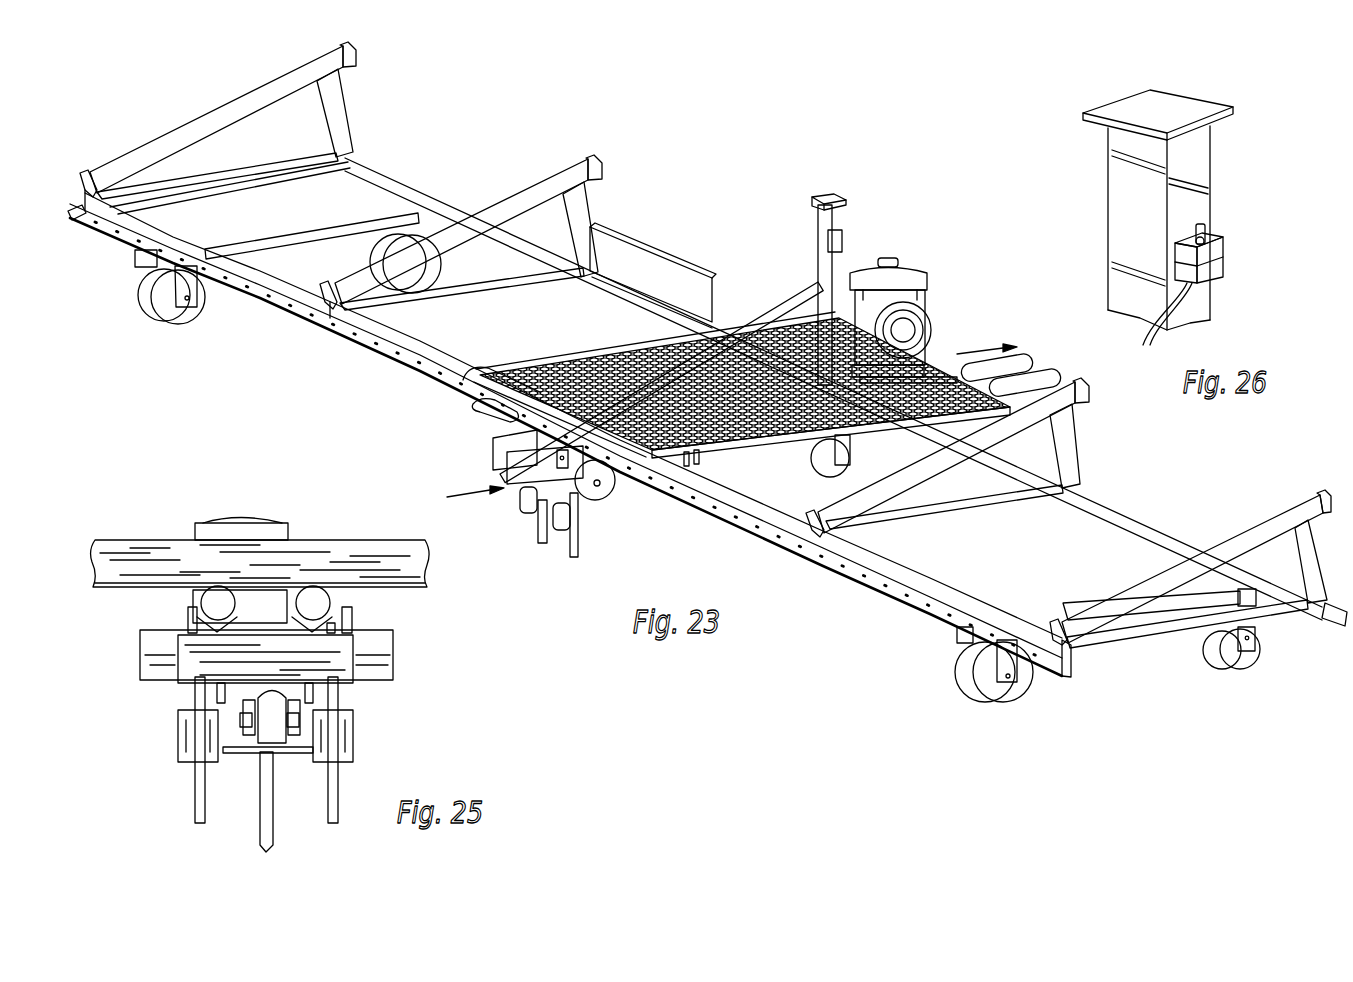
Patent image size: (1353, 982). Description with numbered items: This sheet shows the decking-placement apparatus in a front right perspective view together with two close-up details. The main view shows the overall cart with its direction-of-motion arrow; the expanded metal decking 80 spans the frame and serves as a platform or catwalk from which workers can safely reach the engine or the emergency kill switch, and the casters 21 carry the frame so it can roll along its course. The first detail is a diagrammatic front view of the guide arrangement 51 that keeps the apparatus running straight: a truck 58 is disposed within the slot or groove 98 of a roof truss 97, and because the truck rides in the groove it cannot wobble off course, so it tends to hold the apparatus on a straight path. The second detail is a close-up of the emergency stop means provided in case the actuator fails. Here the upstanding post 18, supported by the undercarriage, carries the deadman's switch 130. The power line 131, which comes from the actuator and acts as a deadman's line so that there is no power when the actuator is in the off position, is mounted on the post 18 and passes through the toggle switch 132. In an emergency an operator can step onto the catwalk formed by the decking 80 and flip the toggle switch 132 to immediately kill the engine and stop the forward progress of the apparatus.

In FIG. 23, the expanded metal decking 80 is at (470, 398).
In FIG. 23, the caster wheel 21 is at (978, 700).
In FIG. 26, the upstanding post 18 is at (1118, 175).
In FIG. 26, the deadman's switch 130 is at (1248, 260).
In FIG. 26, the power line 131 is at (1192, 312).
In FIG. 26, the toggle switch 132 is at (1208, 225).
In FIG. 25, the lift assembly 51 is at (172, 786).
In FIG. 25, the truck 58 is at (277, 750).
In FIG. 25, the roof truss 97 is at (237, 754).
In FIG. 25, the slot or groove 98 is at (260, 765).